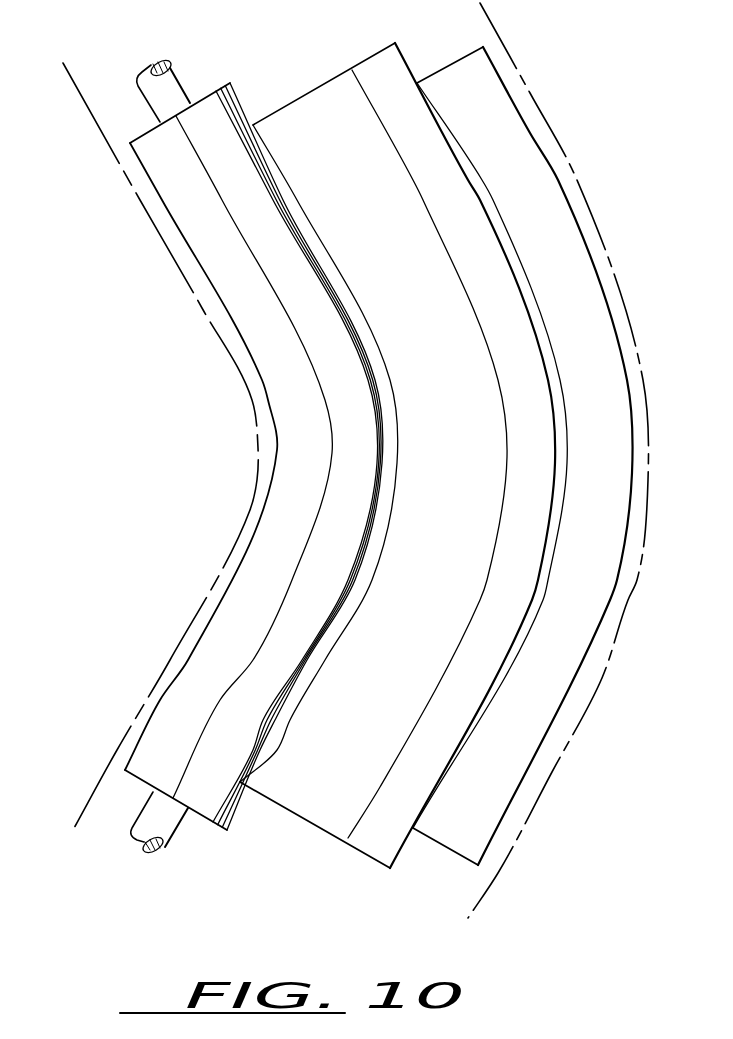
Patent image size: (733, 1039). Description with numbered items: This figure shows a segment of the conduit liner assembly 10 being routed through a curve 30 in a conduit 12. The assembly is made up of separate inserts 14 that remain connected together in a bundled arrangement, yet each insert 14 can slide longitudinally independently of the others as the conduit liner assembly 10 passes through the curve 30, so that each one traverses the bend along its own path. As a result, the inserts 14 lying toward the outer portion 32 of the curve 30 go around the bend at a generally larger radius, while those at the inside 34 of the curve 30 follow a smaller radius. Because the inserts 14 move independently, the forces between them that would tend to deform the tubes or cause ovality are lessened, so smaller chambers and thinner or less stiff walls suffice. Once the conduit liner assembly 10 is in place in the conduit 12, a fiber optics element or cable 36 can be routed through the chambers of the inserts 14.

The conduit liner assembly 10 is at (147, 293).
The conduit 12 is at (96, 140).
The insert 14 is at (190, 692).
The curve 30 is at (218, 502).
The outer portion of the curve 32 is at (645, 440).
The inside of the curve 34 is at (268, 432).
The fiber optics element or cable 36 is at (173, 82).